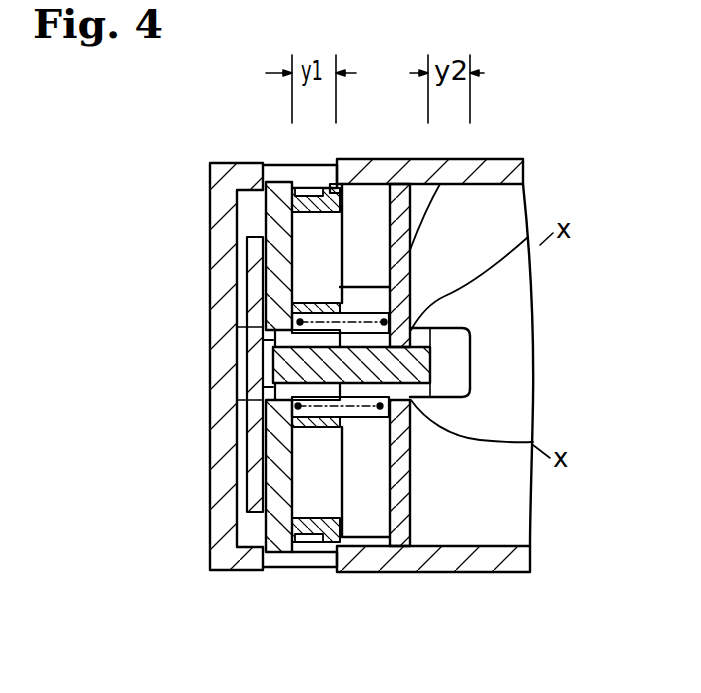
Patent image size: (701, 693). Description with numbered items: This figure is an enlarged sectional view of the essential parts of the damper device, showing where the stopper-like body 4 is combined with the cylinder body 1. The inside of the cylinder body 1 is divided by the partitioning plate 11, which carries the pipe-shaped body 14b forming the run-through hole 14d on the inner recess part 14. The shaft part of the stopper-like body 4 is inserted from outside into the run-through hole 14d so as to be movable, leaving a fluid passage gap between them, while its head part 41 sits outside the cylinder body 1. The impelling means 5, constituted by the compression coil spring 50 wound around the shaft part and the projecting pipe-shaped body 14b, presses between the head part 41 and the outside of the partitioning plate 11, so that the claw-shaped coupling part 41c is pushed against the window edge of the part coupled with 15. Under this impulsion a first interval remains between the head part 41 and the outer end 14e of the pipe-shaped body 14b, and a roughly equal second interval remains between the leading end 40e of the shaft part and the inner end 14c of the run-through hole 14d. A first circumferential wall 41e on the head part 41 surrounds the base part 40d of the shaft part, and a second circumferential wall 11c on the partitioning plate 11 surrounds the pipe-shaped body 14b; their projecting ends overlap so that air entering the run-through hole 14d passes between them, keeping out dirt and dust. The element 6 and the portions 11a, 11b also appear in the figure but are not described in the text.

The cylinder body 1 is at (497, 319).
The stopper-like body 4 is at (180, 374).
The impelling means 5 is at (322, 482).
The compression coil spring 50 is at (340, 407).
The cover plate 6 is at (204, 365).
The partitioning plate 11 is at (433, 549).
The housing flange portion 11a is at (432, 146).
The housing stepped portion 11b is at (375, 141).
The second circumferential wall 11c is at (371, 530).
The inner recess part 14 is at (391, 405).
The pipe-shaped body 14b is at (517, 307).
The inner end 14c is at (561, 357).
The run-through hole 14d is at (519, 408).
The outer end 14e is at (218, 407).
The part coupled with 15 is at (331, 394).
The base part 40d is at (204, 363).
The leading end 40e is at (519, 362).
The head part 41 is at (232, 367).
The coupling part 41c is at (259, 370).
The first circumferential wall 41e is at (237, 291).